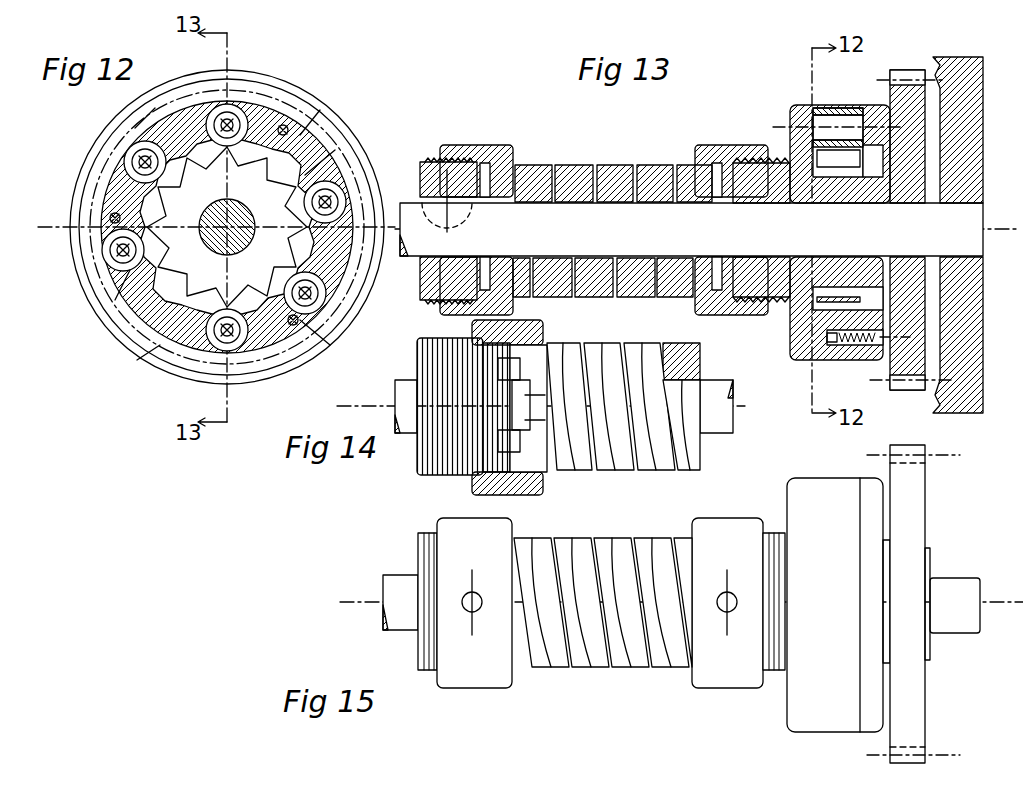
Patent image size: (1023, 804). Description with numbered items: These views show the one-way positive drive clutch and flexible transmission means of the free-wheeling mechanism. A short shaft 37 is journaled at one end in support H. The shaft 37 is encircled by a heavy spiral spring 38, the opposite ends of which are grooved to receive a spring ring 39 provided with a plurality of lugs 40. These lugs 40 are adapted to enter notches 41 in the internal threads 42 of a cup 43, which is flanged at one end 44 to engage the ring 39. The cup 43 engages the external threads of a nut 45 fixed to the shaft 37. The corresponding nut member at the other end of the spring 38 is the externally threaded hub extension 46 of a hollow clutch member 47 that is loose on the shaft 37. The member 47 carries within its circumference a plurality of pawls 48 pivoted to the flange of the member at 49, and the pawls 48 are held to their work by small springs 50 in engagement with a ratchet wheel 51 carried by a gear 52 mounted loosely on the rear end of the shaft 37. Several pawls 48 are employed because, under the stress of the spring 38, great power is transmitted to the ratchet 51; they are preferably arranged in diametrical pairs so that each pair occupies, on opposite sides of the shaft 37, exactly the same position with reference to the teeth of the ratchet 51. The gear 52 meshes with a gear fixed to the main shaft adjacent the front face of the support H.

In FIG. 12, the short shaft 37 is at (227, 227).
In FIG. 13, the short shaft 37 is at (600, 218).
In FIG. 14, the short shaft 37 is at (712, 423).
In FIG. 15, the short shaft 37 is at (400, 615).
In FIG. 13, the spiral spring 38 is at (647, 293).
In FIG. 14, the spiral spring 38 is at (653, 463).
In FIG. 15, the spiral spring 38 is at (590, 655).
In FIG. 13, the spring ring 39 is at (505, 165).
In FIG. 14, the spring ring 39 is at (533, 447).
In FIG. 14, the lugs 40 is at (513, 402).
In FIG. 14, the notches 41 is at (510, 438).
In FIG. 14, the internal threads 42 is at (500, 440).
In FIG. 13, the cup 43 is at (488, 165).
In FIG. 14, the cup 43 is at (520, 483).
In FIG. 15, the cup 43 is at (477, 670).
In FIG. 14, the flanged end 44 is at (533, 340).
In FIG. 13, the nut 45 is at (422, 172).
In FIG. 14, the nut 45 is at (420, 457).
In FIG. 15, the nut 45 is at (425, 540).
In FIG. 13, the externally threaded hub extension 46 is at (792, 335).
In FIG. 15, the externally threaded hub extension 46 is at (775, 672).
In FIG. 13, the hollow clutch member 47 is at (797, 350).
In FIG. 15, the hollow clutch member 47 is at (810, 718).
In FIG. 12, the pawls 48 is at (250, 318).
In FIG. 13, the pawls 48 is at (835, 118).
In FIG. 12, the pivot 49 is at (217, 350).
In FIG. 12, the small springs 50 is at (320, 338).
In FIG. 12, the ratchet wheel 51 is at (163, 300).
In FIG. 13, the ratchet wheel 51 is at (833, 283).
In FIG. 12, the gear 52 is at (280, 92).
In FIG. 13, the gear 52 is at (900, 108).
In FIG. 15, the gear 52 is at (910, 525).
In FIG. 13, the support H is at (953, 380).